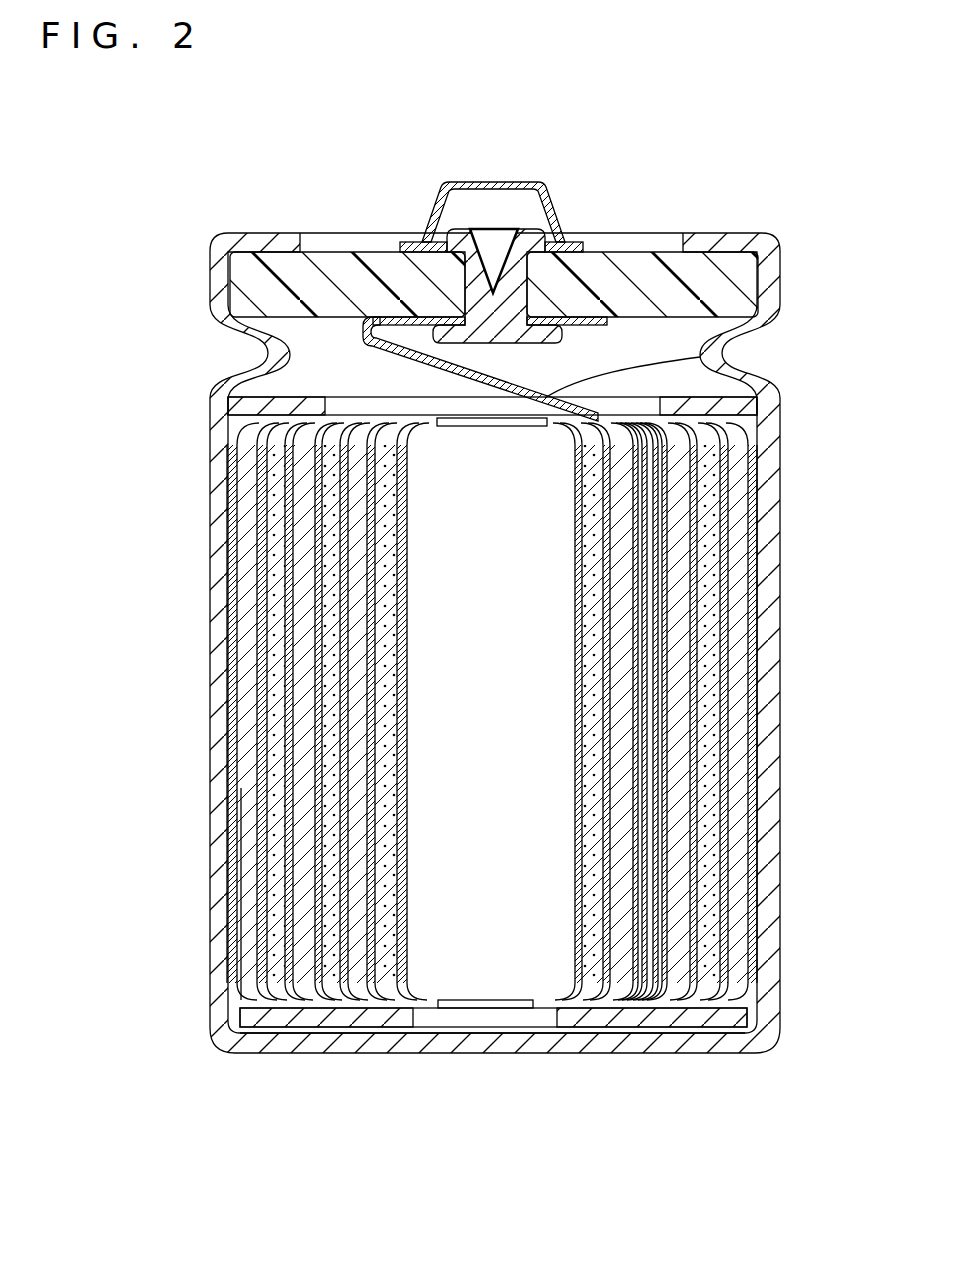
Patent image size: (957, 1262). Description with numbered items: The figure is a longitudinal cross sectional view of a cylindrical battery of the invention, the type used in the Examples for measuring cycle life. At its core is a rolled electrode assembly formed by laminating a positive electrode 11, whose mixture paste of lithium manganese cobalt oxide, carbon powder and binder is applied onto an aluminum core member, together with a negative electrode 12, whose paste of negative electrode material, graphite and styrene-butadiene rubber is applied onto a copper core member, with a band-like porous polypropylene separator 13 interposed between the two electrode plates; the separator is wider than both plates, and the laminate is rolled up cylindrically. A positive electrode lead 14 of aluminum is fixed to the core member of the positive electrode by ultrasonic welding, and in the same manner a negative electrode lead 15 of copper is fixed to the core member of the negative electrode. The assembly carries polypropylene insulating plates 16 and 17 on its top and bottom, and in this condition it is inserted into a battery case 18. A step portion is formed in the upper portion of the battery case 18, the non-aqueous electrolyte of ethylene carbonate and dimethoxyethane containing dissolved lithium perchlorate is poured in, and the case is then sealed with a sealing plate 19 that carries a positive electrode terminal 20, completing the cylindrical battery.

The positive electrode 11 is at (730, 800).
The negative electrode 12 is at (737, 740).
The separator 13 is at (757, 636).
The positive electrode lead 14 is at (723, 357).
The negative electrode lead 15 is at (520, 1030).
The insulating plate 16 is at (758, 411).
The insulating plate 17 is at (735, 1021).
The battery case 18 is at (218, 549).
The sealing plate 19 is at (245, 272).
The positive electrode terminal 20 is at (508, 182).